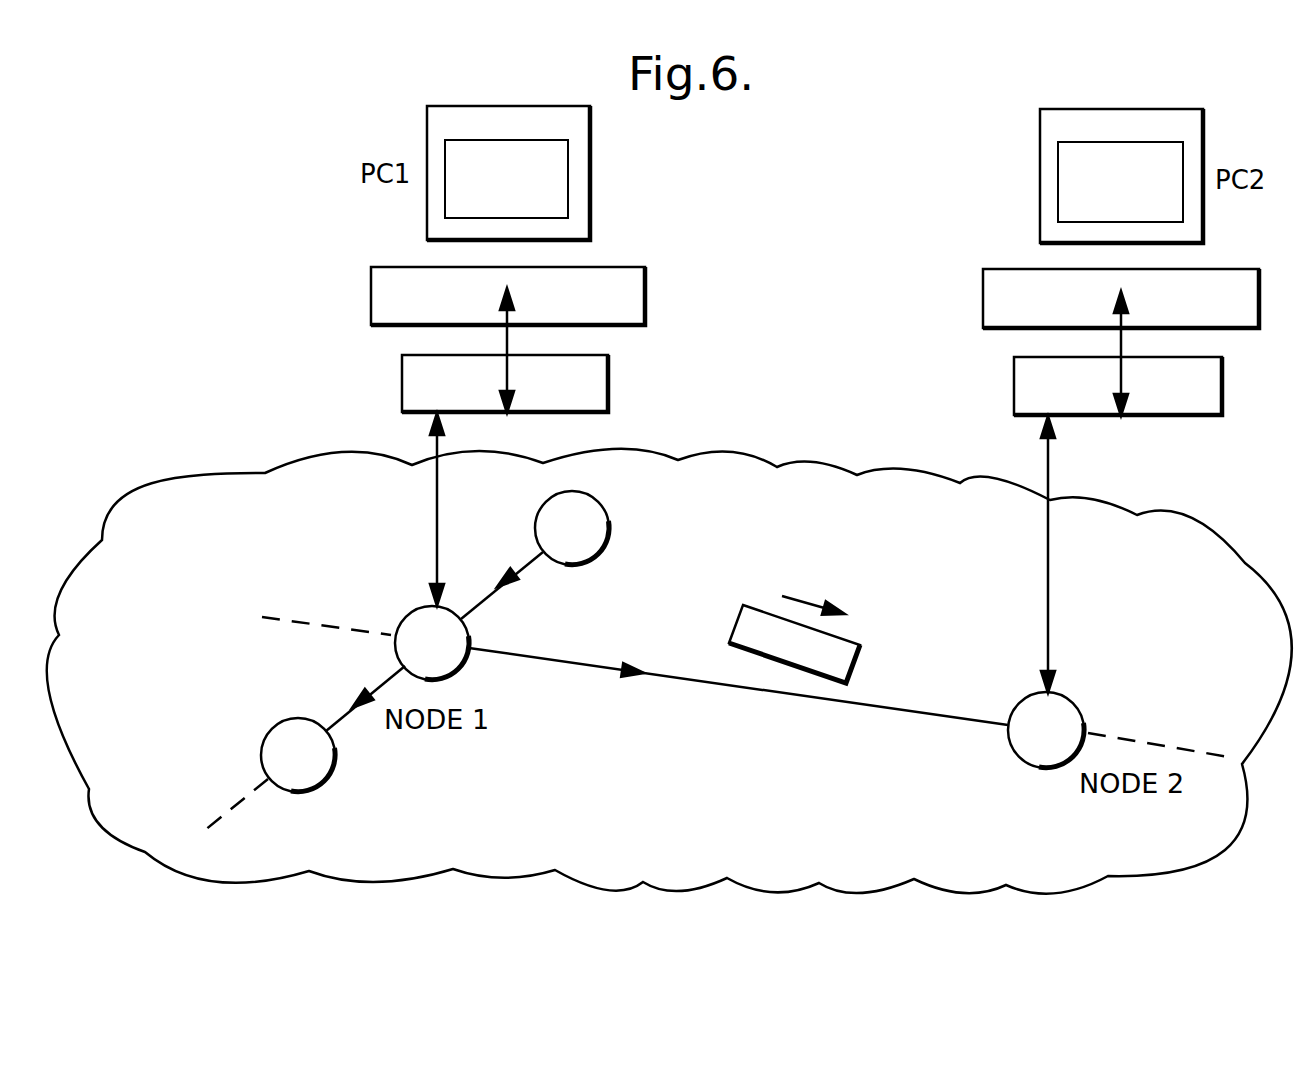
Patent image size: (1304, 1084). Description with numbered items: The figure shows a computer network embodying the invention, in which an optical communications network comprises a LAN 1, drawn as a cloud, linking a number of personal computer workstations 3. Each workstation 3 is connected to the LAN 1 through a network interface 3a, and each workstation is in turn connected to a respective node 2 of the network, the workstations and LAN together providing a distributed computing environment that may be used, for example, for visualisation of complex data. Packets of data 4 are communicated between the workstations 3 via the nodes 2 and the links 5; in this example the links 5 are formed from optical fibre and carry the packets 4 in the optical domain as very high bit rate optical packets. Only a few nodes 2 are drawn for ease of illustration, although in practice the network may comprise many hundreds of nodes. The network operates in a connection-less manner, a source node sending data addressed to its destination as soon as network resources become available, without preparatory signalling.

The LAN 1 is at (1242, 561).
The node 2 is at (303, 792).
The personal computer workstation 3 is at (371, 298).
The network interface 3a is at (402, 388).
The packet of data 4 is at (857, 667).
The link 5 is at (565, 661).